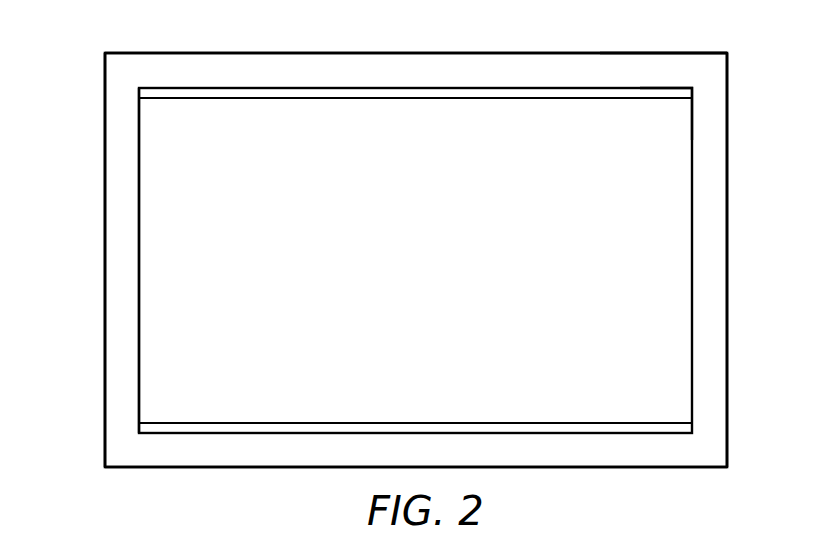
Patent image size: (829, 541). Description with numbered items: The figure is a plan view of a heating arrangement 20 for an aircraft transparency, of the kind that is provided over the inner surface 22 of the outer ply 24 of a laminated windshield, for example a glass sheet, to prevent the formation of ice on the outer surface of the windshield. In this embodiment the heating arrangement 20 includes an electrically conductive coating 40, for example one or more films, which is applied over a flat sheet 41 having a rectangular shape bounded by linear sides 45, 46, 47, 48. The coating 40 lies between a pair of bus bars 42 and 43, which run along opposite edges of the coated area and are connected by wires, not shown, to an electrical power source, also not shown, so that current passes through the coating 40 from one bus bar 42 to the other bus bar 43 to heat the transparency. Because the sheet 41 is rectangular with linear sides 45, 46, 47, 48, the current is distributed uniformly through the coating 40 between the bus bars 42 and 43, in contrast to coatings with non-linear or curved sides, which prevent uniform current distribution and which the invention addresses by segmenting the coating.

The heating arrangement 20 is at (697, 158).
The inner surface 22 is at (522, 70).
The outer ply 24 is at (609, 60).
The electrically conductive coating 40 is at (428, 275).
The flat sheet 41 is at (104, 186).
The bus bar 42 is at (206, 93).
The bus bar 43 is at (248, 427).
The linear side 45 is at (693, 255).
The linear side 46 is at (679, 85).
The linear side 47 is at (138, 270).
The linear side 48 is at (610, 433).